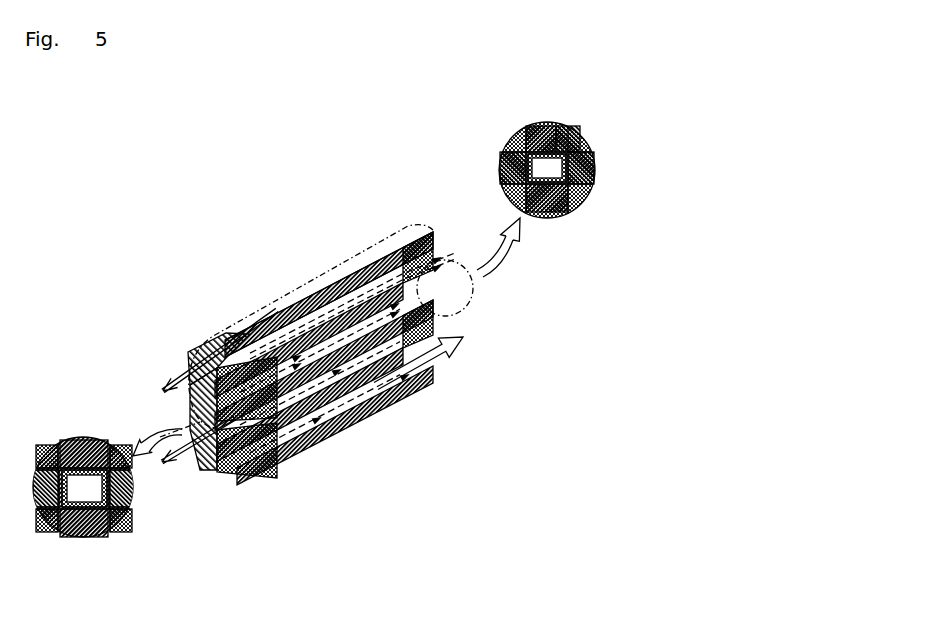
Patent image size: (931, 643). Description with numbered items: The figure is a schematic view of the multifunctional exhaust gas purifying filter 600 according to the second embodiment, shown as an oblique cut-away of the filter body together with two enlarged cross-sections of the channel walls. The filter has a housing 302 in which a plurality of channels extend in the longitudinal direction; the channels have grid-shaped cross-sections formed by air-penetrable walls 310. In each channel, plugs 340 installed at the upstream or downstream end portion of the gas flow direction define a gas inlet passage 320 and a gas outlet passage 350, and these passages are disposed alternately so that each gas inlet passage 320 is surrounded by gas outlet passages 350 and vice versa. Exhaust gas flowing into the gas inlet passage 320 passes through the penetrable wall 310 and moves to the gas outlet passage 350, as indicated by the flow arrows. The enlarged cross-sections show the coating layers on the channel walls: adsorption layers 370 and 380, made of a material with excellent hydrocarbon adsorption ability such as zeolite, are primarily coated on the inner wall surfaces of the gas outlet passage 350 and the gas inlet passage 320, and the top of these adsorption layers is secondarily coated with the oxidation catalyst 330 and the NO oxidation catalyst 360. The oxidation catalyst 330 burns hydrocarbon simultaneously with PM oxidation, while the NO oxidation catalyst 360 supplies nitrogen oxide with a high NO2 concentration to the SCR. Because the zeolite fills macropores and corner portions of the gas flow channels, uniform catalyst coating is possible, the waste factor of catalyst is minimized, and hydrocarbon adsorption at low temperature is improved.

The multifunctional exhaust gas purifying filter 600 is at (318, 243).
The housing 302 is at (272, 303).
The air-penetrable wall 310 is at (298, 333).
The gas inlet passage 320 is at (250, 333).
The oxidation catalyst 330 is at (378, 262).
The plug 340 is at (433, 250).
The gas outlet passage 350 is at (378, 397).
The NO oxidation catalyst 360 is at (544, 122).
The adsorption layer 370 is at (570, 122).
The adsorption layer 380 is at (337, 283).